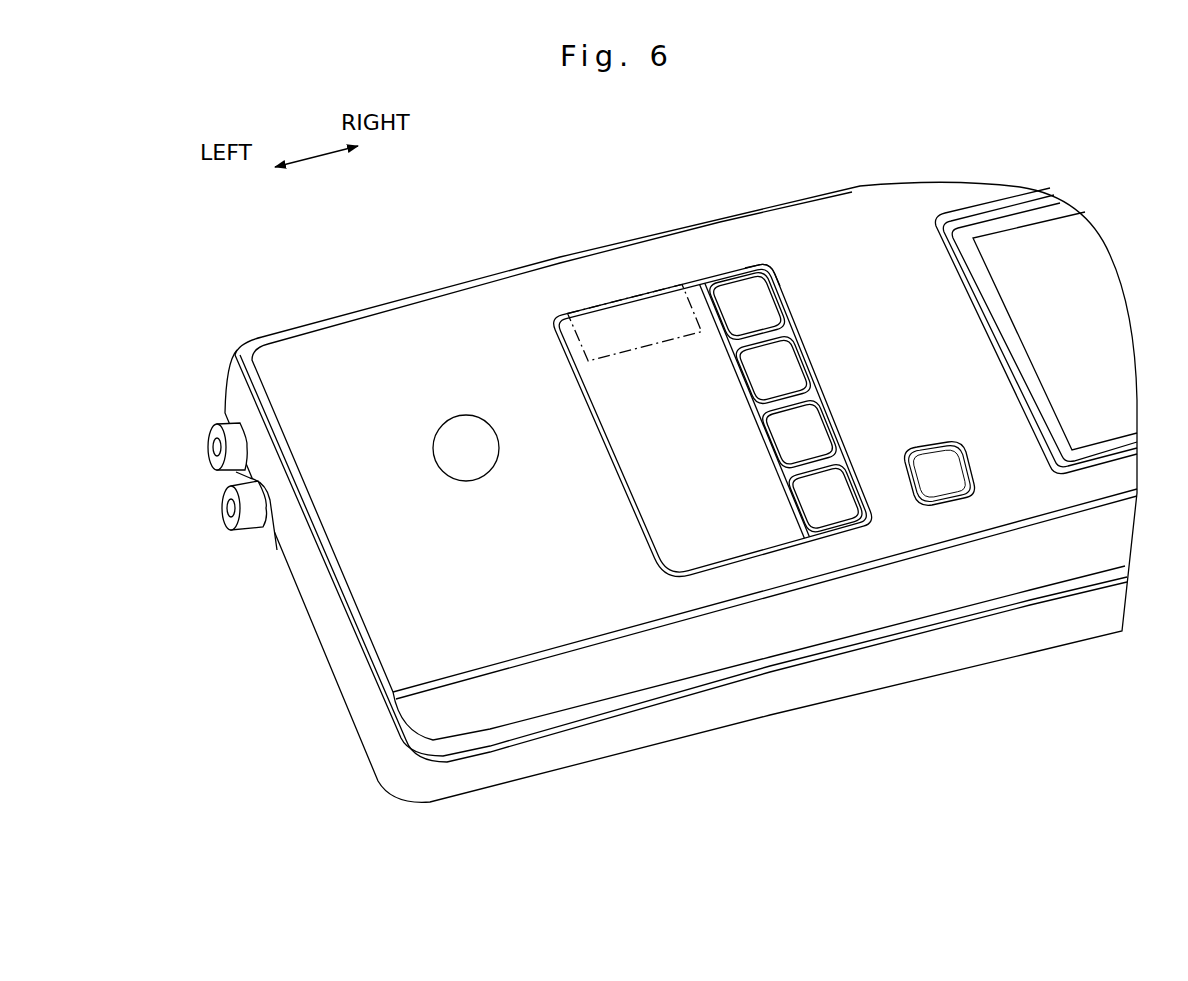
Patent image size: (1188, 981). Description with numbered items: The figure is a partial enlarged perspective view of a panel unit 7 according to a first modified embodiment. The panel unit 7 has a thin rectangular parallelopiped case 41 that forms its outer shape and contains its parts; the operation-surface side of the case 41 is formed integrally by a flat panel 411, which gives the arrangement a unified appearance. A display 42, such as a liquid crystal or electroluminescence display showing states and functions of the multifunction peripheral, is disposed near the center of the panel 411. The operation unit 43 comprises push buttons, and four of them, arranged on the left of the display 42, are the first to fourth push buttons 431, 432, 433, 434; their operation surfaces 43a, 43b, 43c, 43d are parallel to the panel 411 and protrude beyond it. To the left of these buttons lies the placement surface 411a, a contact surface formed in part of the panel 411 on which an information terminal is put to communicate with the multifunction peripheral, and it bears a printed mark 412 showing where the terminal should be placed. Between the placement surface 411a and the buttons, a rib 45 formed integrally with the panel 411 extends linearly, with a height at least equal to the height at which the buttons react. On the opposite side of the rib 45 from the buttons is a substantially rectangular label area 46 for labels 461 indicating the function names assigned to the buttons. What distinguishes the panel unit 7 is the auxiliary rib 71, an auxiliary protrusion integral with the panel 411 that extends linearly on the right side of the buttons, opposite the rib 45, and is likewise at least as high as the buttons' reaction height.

The panel unit 7 is at (262, 282).
The case 41 is at (360, 293).
The panel 411 is at (810, 222).
The placement surface 411a is at (490, 398).
The mark 412 is at (449, 420).
The display 42 is at (1052, 243).
The operation unit 43 is at (838, 556).
The operation surface 43a is at (756, 312).
The operation surface 43b is at (788, 376).
The operation surface 43c is at (820, 437).
The operation surface 43d is at (838, 514).
The first push button 431 is at (755, 295).
The second push button 432 is at (787, 350).
The third push button 433 is at (817, 418).
The fourth push button 434 is at (857, 508).
The rib 45 is at (700, 275).
The label area 46 is at (720, 540).
The labels 461 is at (640, 318).
The auxiliary rib 71 is at (771, 262).